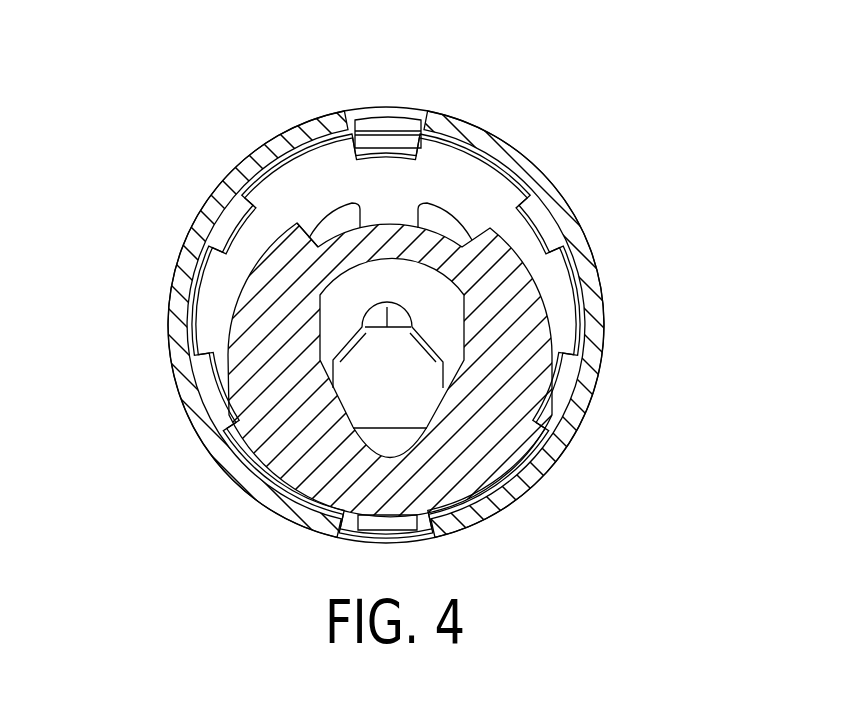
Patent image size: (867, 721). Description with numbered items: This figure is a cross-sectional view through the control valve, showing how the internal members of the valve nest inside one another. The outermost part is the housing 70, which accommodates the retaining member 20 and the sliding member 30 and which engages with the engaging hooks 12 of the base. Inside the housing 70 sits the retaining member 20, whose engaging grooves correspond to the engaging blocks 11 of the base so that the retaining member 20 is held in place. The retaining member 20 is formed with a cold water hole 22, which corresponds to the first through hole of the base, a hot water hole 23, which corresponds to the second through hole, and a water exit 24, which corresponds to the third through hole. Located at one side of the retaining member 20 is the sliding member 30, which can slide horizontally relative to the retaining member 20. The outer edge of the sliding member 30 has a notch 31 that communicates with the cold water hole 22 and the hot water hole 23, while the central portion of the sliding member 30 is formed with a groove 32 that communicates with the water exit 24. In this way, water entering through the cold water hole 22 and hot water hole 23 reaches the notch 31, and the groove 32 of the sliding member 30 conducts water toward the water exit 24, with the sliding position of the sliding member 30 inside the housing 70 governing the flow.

The engaging blocks 11 is at (237, 223).
The engaging hooks 12 is at (392, 133).
The retaining member 20 is at (180, 284).
The cold water hole 22 is at (342, 220).
The hot water hole 23 is at (450, 230).
The water exit 24 is at (410, 388).
The sliding member 30 is at (208, 357).
The notch 31 is at (318, 252).
The groove 32 is at (455, 293).
The housing 70 is at (626, 347).